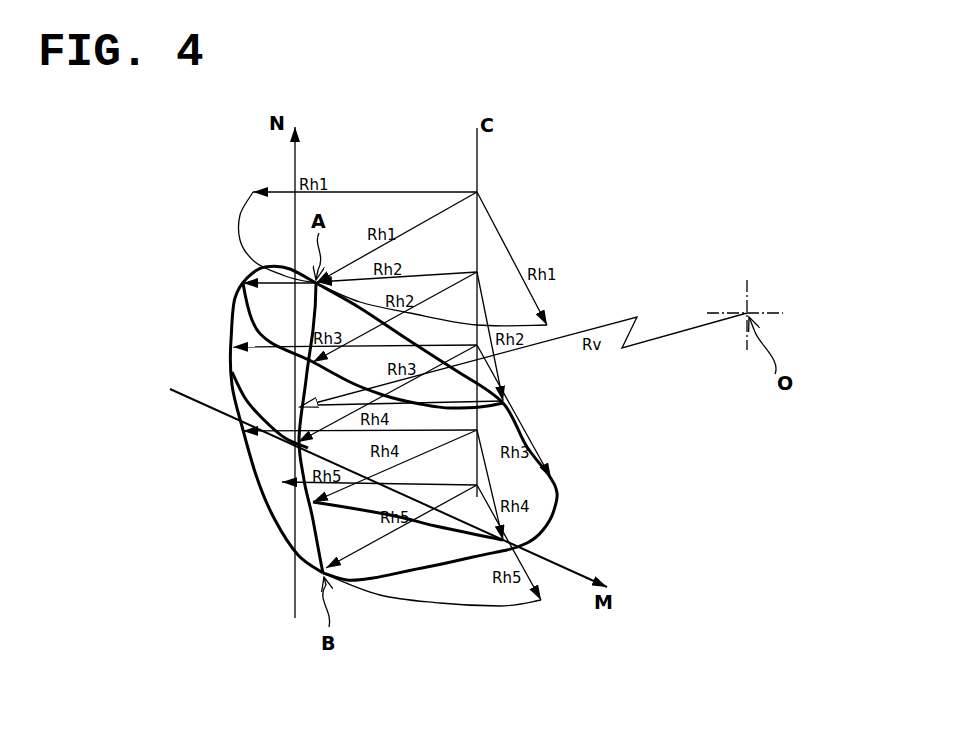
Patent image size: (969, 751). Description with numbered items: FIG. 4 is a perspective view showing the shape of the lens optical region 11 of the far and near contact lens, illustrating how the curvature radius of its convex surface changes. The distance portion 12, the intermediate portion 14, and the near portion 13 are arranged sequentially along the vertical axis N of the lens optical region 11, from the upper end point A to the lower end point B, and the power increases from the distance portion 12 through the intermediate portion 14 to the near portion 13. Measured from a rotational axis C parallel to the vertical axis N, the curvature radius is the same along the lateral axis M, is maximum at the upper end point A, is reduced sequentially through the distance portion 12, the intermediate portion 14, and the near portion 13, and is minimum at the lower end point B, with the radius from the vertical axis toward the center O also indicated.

The lens optical region 11 is at (545, 439).
The distance portion 12 is at (197, 275).
The near portion 13 is at (197, 435).
The intermediate portion 14 is at (197, 380).